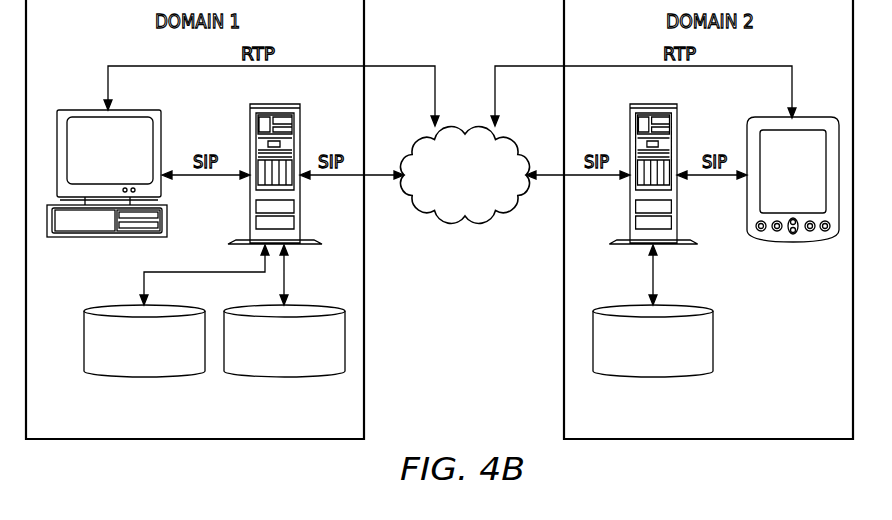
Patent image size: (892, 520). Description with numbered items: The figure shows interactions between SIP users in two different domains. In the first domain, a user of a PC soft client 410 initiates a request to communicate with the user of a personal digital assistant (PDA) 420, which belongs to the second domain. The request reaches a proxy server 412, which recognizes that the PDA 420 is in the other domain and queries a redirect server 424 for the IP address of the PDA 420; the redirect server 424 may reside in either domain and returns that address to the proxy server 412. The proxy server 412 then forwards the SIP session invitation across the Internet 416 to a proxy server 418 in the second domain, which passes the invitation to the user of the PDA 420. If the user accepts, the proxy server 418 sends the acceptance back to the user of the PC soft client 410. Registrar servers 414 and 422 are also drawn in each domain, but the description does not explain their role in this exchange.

The PC soft client 410 is at (82, 108).
The proxy server 412 is at (248, 204).
The registrar server (domain 1) 414 is at (134, 377).
The Internet 416 is at (463, 226).
The proxy server 418 is at (670, 245).
The personal digital assistant (PDA) 420 is at (815, 117).
The registrar server (domain 2) 422 is at (662, 378).
The redirect server 424 is at (293, 378).